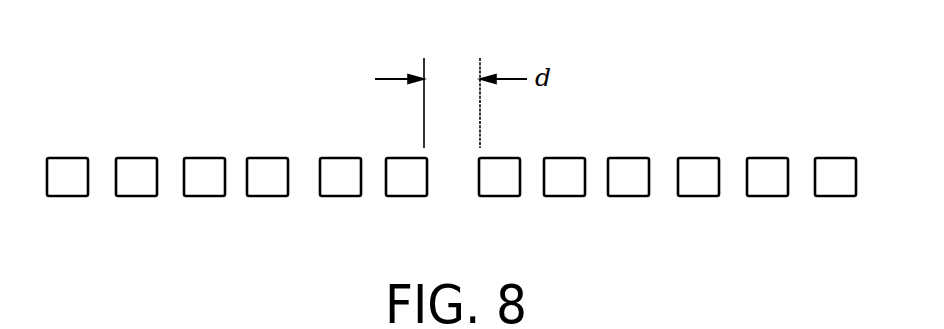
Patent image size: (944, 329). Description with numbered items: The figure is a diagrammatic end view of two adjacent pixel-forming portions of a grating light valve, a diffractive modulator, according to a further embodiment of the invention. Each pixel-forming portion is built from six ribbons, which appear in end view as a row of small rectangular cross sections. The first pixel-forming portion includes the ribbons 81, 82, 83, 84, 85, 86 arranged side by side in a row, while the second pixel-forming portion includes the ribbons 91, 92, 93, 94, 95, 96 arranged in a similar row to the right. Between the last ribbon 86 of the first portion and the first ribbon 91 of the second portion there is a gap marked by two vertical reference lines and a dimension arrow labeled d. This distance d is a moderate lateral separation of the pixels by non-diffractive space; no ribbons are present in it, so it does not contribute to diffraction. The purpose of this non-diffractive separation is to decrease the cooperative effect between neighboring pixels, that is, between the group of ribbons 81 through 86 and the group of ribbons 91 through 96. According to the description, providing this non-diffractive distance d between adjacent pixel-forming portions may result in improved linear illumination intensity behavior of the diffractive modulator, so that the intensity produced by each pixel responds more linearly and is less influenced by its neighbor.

The ribbon 81 is at (70, 196).
The ribbon 82 is at (129, 158).
The ribbon 83 is at (205, 196).
The ribbon 84 is at (270, 158).
The ribbon 85 is at (343, 196).
The ribbon 86 is at (407, 196).
The ribbon 91 is at (502, 196).
The ribbon 92 is at (565, 158).
The ribbon 93 is at (628, 196).
The ribbon 94 is at (702, 158).
The ribbon 95 is at (770, 196).
The ribbon 96 is at (837, 158).